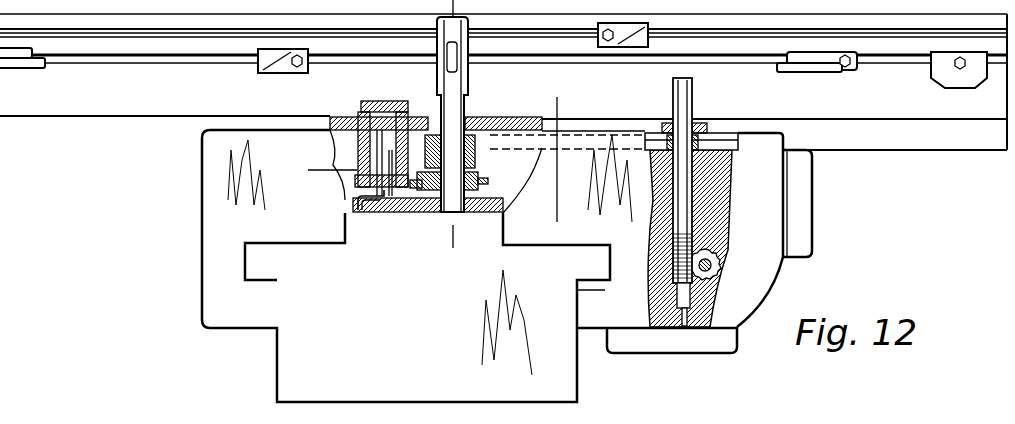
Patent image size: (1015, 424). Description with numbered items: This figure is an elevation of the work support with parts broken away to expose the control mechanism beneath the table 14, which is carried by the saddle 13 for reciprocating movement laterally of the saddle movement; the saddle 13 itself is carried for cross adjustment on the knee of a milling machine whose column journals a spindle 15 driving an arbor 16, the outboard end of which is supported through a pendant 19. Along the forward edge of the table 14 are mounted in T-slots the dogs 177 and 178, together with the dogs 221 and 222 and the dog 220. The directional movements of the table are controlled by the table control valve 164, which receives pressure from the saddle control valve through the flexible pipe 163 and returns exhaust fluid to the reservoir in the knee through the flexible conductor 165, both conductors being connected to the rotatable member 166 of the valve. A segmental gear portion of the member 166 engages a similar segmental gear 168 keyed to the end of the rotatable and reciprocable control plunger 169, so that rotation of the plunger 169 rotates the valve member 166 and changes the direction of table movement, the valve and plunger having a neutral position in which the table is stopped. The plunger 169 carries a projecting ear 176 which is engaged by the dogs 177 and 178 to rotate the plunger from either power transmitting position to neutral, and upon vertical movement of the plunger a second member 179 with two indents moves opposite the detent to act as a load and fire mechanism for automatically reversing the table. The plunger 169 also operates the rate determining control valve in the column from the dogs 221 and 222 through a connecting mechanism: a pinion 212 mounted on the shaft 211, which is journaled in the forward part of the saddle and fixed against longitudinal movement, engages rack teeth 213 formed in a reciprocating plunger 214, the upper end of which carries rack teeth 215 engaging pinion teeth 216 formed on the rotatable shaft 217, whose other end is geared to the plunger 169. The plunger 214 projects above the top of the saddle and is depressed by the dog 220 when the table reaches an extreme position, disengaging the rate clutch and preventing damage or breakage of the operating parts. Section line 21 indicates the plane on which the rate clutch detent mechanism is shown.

The table 14 is at (714, 16).
The dog 177 is at (17, 60).
The dog 221 is at (262, 69).
The dog 222 is at (633, 50).
The dog 178 is at (795, 66).
The dog 220 is at (953, 82).
The projecting ear 176 is at (458, 63).
The control plunger 169 is at (476, 114).
The table control valve 164 is at (362, 112).
The rotatable member 166 is at (408, 210).
The flexible conductor 165 is at (360, 206).
The segmental gear 168 is at (422, 212).
The second member 179 is at (476, 173).
The flexible pipe 163 is at (384, 214).
The pinion teeth 216 is at (674, 120).
The rack teeth 215 is at (700, 128).
The rotatable shaft 217 is at (742, 134).
The rack teeth 213 is at (656, 264).
The reciprocating plunger 214 is at (660, 299).
The shaft 211 is at (722, 265).
The pinion 212 is at (724, 256).
The saddle 13 is at (452, 237).
The spindle 15 is at (308, 160).
The arbor 16 is at (335, 172).
The pendant 19 is at (452, 3).
The section line 21 is at (557, 100).